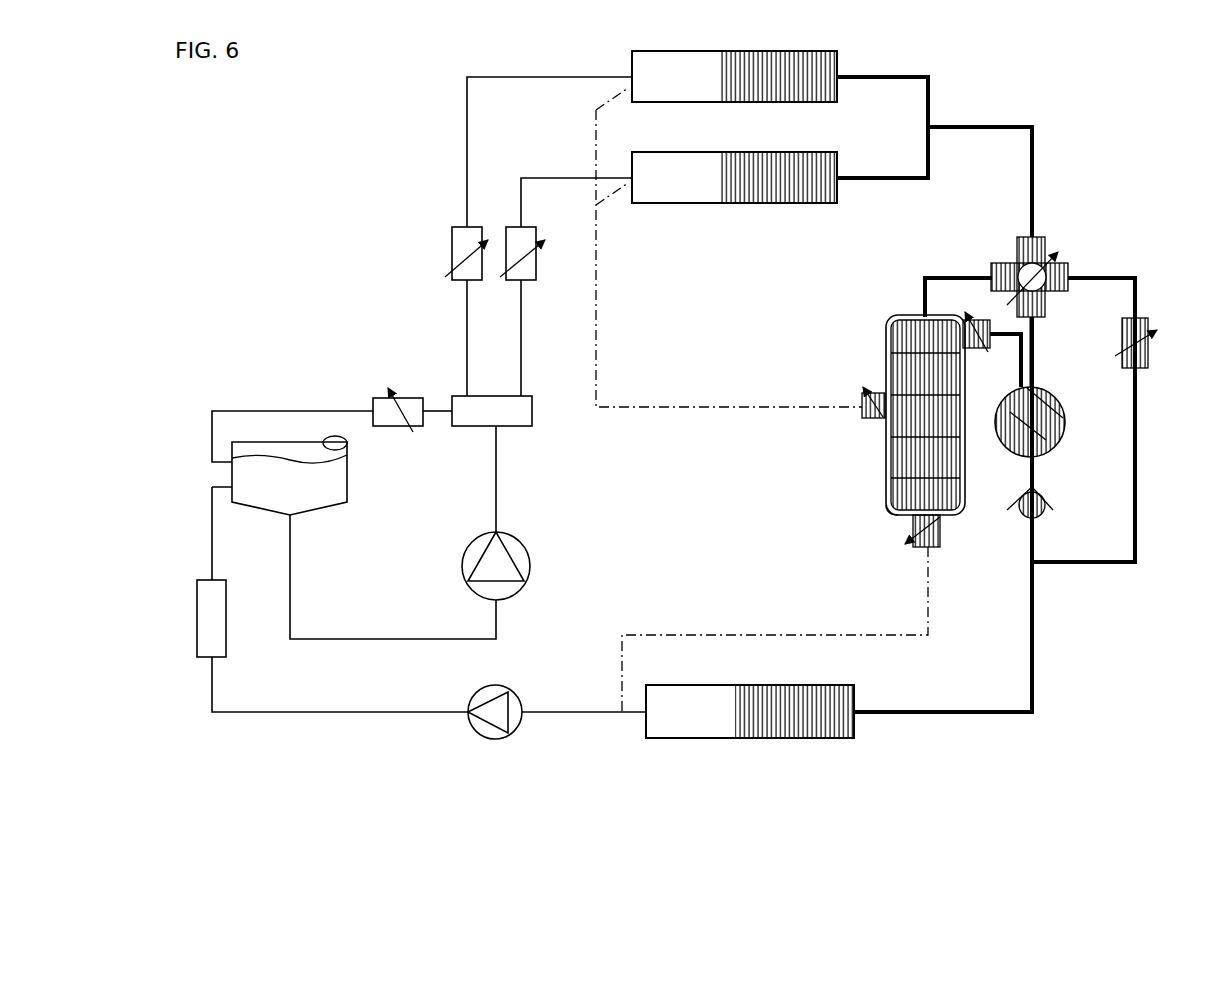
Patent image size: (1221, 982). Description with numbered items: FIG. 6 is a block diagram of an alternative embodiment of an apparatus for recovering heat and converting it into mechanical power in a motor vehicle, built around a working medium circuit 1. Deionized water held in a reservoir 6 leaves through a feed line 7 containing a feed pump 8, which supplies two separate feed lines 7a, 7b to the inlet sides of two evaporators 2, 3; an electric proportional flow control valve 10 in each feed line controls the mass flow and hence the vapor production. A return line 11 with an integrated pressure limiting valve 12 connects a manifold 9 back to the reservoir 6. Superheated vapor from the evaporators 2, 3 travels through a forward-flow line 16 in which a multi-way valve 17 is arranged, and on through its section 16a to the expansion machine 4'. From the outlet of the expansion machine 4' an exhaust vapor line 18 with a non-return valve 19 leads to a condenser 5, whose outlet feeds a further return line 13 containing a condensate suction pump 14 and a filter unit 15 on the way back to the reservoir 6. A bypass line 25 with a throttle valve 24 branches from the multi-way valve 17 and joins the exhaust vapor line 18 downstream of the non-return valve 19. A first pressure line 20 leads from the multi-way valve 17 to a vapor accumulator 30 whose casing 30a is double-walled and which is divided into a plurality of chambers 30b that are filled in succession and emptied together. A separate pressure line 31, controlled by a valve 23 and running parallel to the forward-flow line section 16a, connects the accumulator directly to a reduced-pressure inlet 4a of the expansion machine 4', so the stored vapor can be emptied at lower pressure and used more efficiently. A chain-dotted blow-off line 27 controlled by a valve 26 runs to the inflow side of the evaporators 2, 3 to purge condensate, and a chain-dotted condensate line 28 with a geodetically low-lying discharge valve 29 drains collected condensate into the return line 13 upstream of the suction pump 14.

The working medium circuit 1 is at (398, 318).
The evaporator 2 is at (800, 103).
The evaporator 3 is at (802, 203).
The expansion machine 4' is at (1090, 446).
The reduced-pressure inlet 4a is at (1020, 390).
The condenser 5 is at (825, 739).
The reservoir 6 is at (350, 477).
The feed line 7 is at (358, 636).
The feed line 7a is at (466, 154).
The feed line 7b is at (521, 177).
The feed pump 8 is at (531, 548).
The manifold 9 is at (534, 414).
The electric proportional flow control valve 10 is at (451, 250).
The return line 11 is at (268, 409).
The pressure limiting valve 12 is at (415, 428).
The return line 13 is at (383, 713).
The condensate suction pump 14 is at (510, 731).
The filter unit 15 is at (228, 622).
The forward-flow line 16 is at (893, 176).
The forward-flow line section 16a is at (1032, 370).
The multi-way valve 17 is at (1066, 250).
The exhaust vapor line 18 is at (1031, 637).
The non-return valve 19 is at (1020, 515).
The first pressure line 20 is at (924, 288).
The controllable valve 23 is at (978, 310).
The throttle valve 24 is at (1152, 345).
The bypass line 25 is at (1137, 405).
The valve 26 is at (861, 418).
The blow-off line 27 is at (710, 404).
The condensate line 28 is at (800, 633).
The discharge valve 29 is at (912, 530).
The vapor accumulator 30 is at (887, 425).
The casing 30a is at (887, 500).
The chamber 30b is at (917, 338).
The pressure line 31 is at (1024, 356).